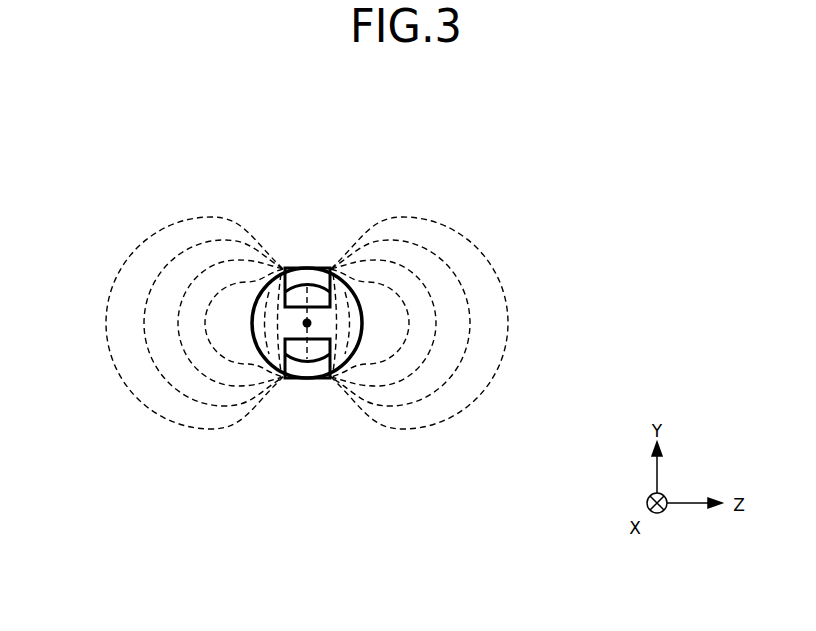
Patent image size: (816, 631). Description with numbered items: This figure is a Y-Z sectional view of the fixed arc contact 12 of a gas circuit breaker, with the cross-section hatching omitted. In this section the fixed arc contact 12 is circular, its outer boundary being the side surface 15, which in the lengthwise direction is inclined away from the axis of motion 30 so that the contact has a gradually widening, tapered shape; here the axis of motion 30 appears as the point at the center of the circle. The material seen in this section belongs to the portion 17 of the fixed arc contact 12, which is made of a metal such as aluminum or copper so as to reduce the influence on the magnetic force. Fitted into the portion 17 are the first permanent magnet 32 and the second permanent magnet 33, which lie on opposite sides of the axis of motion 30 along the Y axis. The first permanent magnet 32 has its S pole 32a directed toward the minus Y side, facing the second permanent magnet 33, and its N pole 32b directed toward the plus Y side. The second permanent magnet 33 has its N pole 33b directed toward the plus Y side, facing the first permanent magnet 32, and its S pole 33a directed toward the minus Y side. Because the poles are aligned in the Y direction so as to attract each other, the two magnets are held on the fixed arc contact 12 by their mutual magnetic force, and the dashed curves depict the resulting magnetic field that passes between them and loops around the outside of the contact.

The fixed arc contact 12 is at (300, 250).
The side surface 15 is at (268, 370).
The portion 17 is at (256, 332).
The axis of motion 30 is at (307, 324).
The first permanent magnet 32 is at (352, 198).
The S pole 32a is at (331, 289).
The N pole 32b is at (311, 278).
The second permanent magnet 33 is at (352, 450).
The S pole 33a is at (312, 368).
The N pole 33b is at (331, 356).